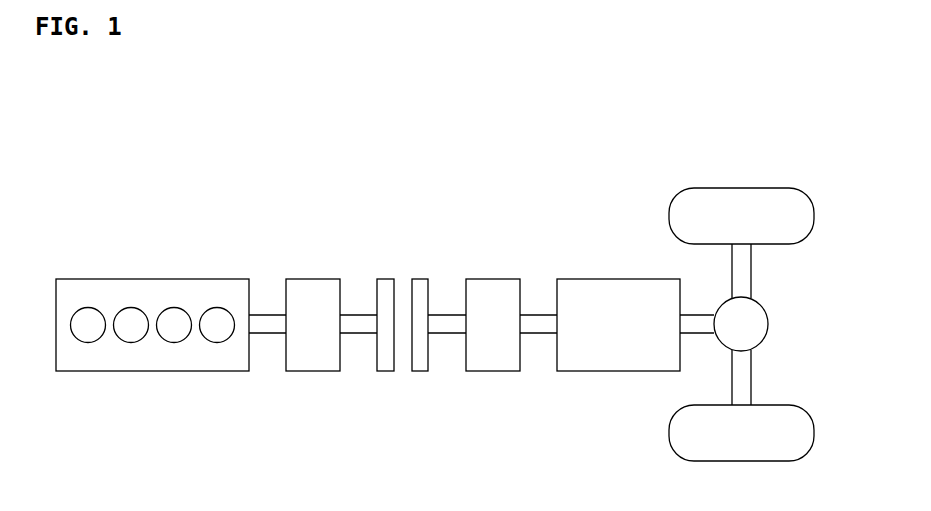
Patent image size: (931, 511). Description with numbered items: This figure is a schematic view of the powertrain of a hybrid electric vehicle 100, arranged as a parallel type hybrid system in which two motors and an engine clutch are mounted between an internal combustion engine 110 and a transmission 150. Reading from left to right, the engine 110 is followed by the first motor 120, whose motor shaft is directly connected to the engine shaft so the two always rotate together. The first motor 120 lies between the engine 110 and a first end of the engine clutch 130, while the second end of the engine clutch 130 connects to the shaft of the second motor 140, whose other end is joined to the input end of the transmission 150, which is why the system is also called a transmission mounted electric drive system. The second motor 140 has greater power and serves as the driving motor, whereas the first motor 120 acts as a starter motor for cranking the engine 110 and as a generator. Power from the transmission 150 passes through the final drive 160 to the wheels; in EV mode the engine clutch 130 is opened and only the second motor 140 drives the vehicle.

The hybrid electric vehicle 100 is at (163, 135).
The internal combustion engine 110 is at (155, 279).
The first motor 120 is at (312, 279).
The engine clutch 130 is at (419, 279).
The second motor 140 is at (492, 279).
The transmission 150 is at (599, 279).
The final drive 160 is at (768, 323).